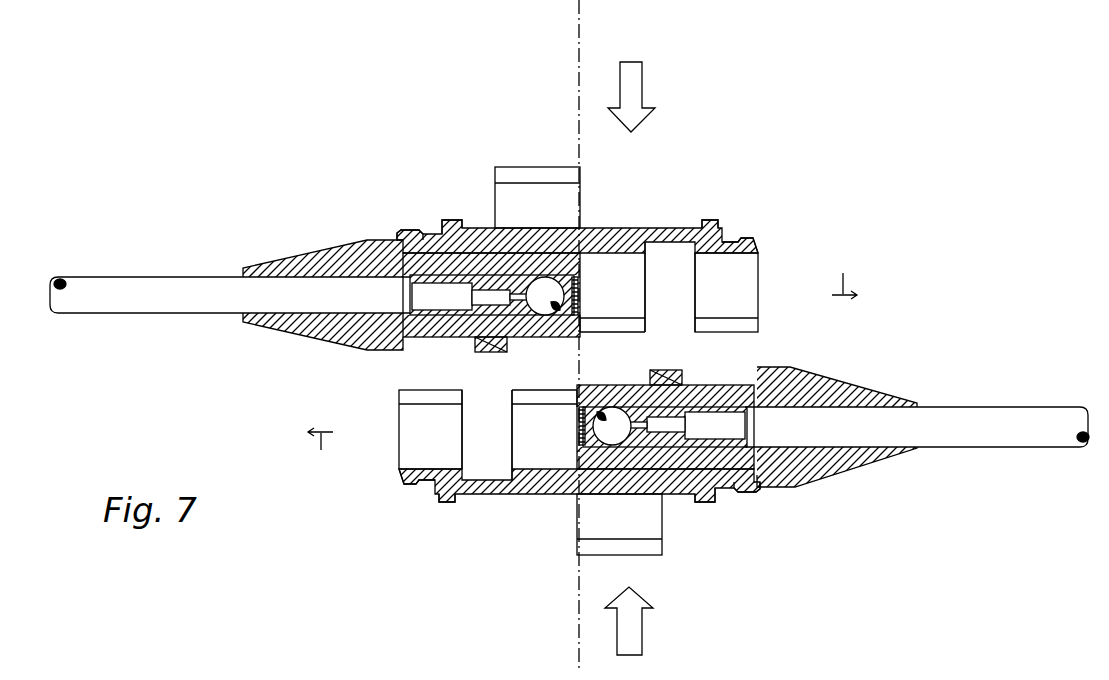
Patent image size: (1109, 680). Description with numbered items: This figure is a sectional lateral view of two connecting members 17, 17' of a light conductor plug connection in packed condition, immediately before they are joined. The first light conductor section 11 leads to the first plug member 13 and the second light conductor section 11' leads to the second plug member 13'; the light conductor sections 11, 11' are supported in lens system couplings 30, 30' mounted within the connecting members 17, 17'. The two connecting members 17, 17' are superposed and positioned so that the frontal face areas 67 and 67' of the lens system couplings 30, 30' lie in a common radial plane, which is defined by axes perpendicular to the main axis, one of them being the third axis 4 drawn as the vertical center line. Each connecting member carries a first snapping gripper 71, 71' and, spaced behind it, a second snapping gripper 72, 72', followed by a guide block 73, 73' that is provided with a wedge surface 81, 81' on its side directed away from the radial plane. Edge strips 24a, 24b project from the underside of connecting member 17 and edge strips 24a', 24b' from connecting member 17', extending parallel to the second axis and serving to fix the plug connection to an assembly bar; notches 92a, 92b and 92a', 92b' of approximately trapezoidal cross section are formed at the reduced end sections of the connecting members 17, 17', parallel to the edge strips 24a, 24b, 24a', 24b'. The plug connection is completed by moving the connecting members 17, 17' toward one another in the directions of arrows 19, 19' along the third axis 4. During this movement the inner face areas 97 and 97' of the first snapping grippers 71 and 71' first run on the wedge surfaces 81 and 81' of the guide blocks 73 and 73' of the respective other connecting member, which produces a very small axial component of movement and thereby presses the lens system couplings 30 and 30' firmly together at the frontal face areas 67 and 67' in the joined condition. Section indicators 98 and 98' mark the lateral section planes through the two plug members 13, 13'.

The third axis 4 is at (579, 28).
The first light conductor section 11 is at (917, 404).
The second light conductor section 11' is at (230, 261).
The first plug member 13 is at (833, 472).
The second plug member 13' is at (328, 245).
The connecting member 17 is at (579, 525).
The connecting member 17' is at (577, 206).
The arrow 19 is at (647, 621).
The arrow 19' is at (652, 97).
The edge strip 24a is at (459, 525).
The edge strip 24a' is at (461, 196).
The edge strip 24b is at (715, 523).
The edge strip 24b' is at (731, 208).
The lens system coupling 30 is at (679, 405).
The lens system coupling 30' is at (491, 310).
The frontal face area 67 is at (600, 394).
The frontal face area 67' is at (600, 251).
The first snapping gripper 71 is at (411, 429).
The first snapping gripper 71' is at (753, 292).
The second snapping gripper 72 is at (527, 435).
The second snapping gripper 72' is at (632, 287).
The guide block 73 is at (671, 363).
The guide block 73' is at (494, 358).
The wedge surface 81 is at (691, 362).
The wedge surface 81' is at (483, 359).
The notch 92a is at (412, 500).
The notch 92a' is at (413, 213).
The notch 92b is at (757, 507).
The notch 92b' is at (768, 231).
The inner face area 97 is at (487, 435).
The inner face area 97' is at (670, 290).
The section line 98 is at (320, 454).
The section line 98' is at (848, 275).